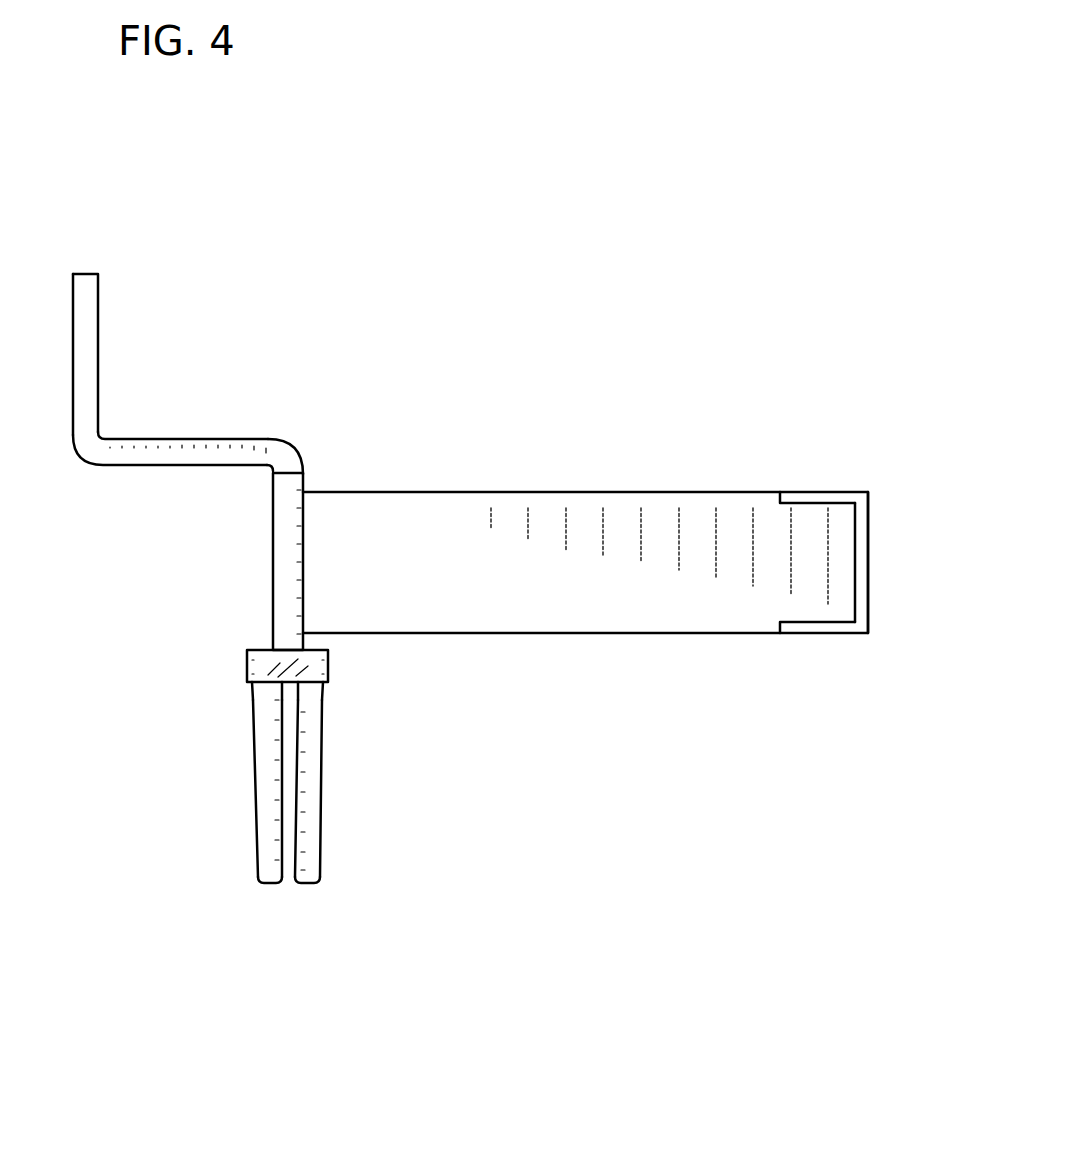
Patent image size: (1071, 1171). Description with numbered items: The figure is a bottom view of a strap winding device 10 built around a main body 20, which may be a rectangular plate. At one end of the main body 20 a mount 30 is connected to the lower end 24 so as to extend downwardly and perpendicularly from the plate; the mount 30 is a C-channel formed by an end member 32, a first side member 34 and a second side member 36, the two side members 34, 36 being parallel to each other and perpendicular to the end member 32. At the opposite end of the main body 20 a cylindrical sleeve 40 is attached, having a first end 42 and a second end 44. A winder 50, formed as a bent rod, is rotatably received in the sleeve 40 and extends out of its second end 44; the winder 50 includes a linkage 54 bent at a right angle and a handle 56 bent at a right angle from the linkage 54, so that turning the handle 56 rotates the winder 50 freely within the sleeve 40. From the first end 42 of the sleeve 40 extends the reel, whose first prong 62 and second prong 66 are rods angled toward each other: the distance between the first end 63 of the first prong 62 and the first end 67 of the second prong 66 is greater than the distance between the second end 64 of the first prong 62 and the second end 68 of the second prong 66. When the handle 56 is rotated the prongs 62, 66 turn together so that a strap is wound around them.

The strap winding device 10 is at (646, 235).
The main body 20 is at (450, 618).
The lower end of the main body 24 is at (458, 527).
The mount 30 is at (850, 478).
The end member 32 is at (872, 582).
The first side member 34 is at (817, 493).
The second side member 36 is at (802, 628).
The sleeve 40 is at (283, 550).
The first end of the sleeve 42 is at (285, 467).
The second end of the sleeve 44 is at (287, 647).
The winder 50 is at (148, 436).
The linkage 54 is at (222, 447).
The handle 56 is at (82, 315).
The first prong 62 is at (260, 745).
The first end of the first prong 63 is at (263, 682).
The second end of the first prong 64 is at (273, 885).
The second prong 66 is at (310, 780).
The first end of the second prong 67 is at (312, 683).
The second end of the second prong 68 is at (312, 887).